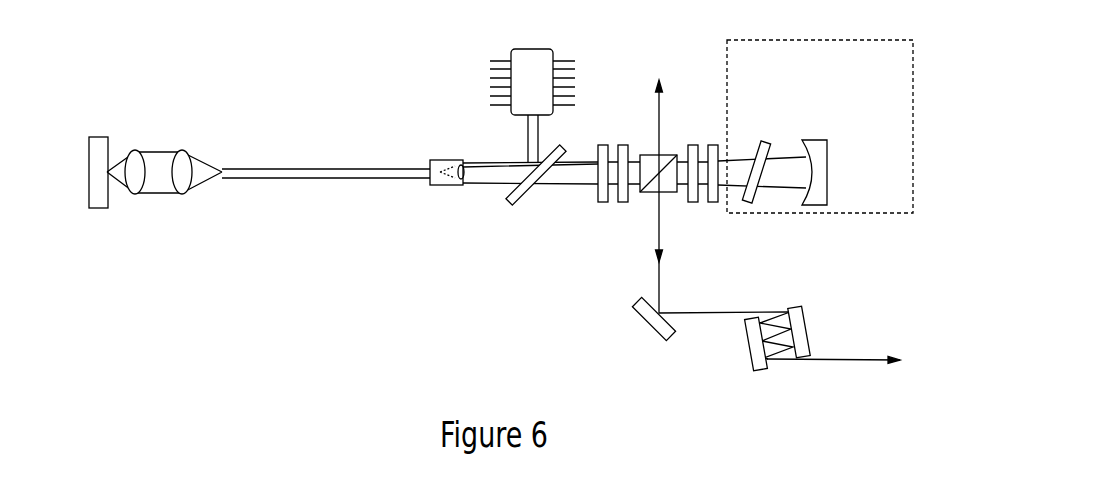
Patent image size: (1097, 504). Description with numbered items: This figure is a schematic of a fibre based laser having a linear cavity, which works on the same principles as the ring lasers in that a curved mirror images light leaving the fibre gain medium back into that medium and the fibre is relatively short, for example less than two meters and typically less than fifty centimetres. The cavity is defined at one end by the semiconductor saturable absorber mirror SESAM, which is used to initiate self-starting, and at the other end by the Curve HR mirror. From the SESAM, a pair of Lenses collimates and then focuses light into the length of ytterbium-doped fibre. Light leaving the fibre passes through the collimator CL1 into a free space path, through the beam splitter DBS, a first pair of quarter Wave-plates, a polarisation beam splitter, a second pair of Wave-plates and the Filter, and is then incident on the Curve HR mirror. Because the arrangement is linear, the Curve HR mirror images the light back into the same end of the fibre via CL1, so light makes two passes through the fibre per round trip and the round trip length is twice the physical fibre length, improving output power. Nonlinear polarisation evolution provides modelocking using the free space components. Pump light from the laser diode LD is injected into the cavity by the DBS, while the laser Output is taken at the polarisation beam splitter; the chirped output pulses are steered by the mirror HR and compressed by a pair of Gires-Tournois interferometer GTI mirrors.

The semiconductor saturable absorber mirror SESAM is at (101, 159).
The pair of lenses Lenses is at (164, 188).
The collimator CL1 is at (446, 187).
The laser diode LD is at (532, 106).
The beam splitter DBS is at (530, 190).
The quarter wave plates Wave-plates is at (603, 205).
The output Output is at (685, 182).
The filter Filter is at (761, 158).
The curved high reflectance mirror Curve HR mirror is at (852, 146).
The high reflectance mirror HR is at (642, 323).
The Gires-Tournois interferometer mirrors GTI is at (822, 342).